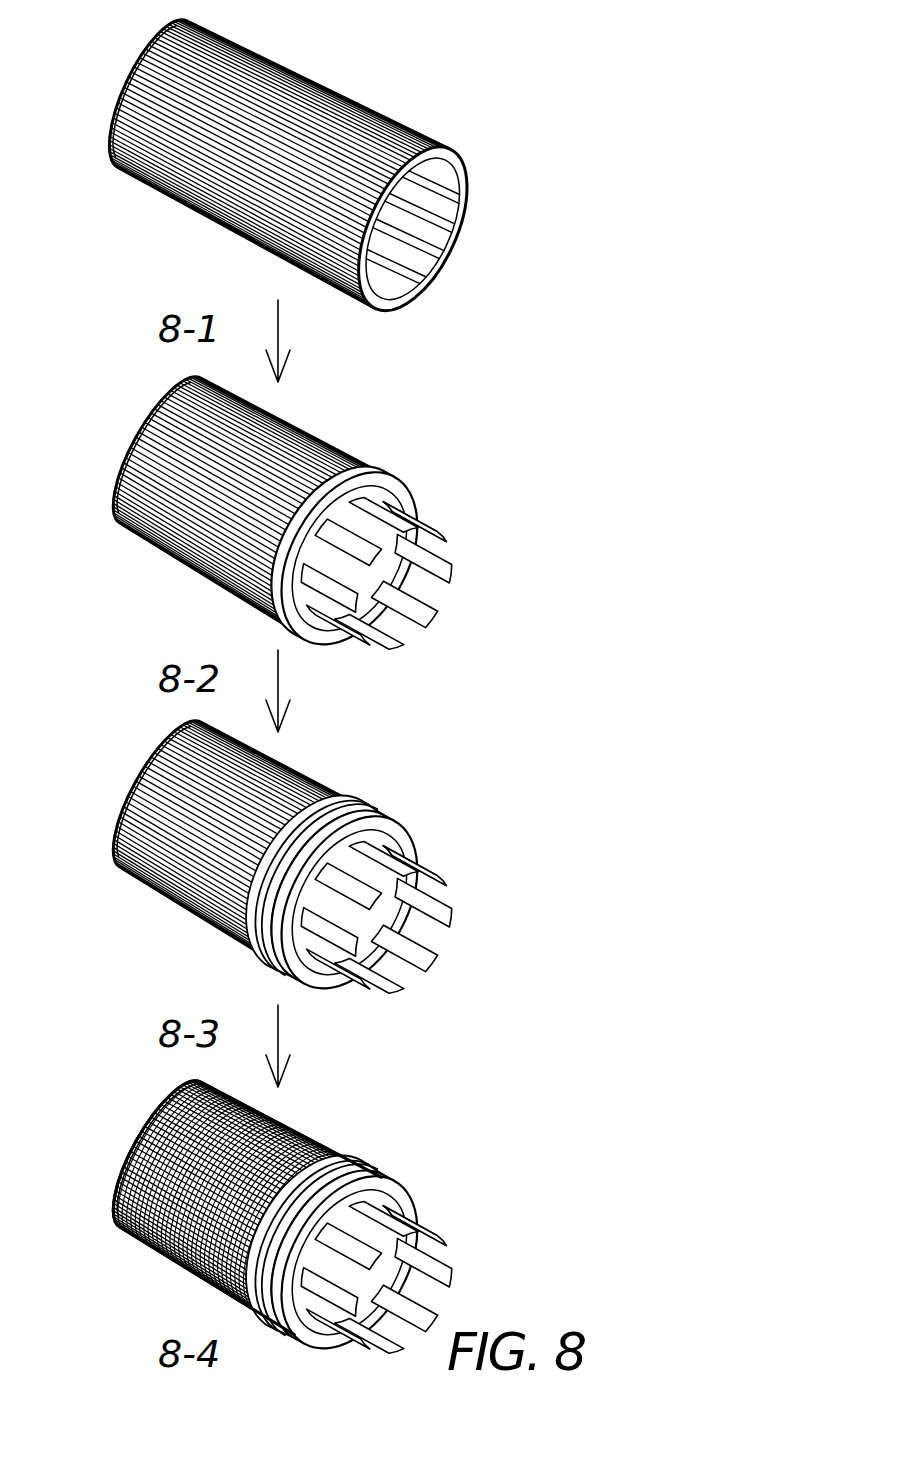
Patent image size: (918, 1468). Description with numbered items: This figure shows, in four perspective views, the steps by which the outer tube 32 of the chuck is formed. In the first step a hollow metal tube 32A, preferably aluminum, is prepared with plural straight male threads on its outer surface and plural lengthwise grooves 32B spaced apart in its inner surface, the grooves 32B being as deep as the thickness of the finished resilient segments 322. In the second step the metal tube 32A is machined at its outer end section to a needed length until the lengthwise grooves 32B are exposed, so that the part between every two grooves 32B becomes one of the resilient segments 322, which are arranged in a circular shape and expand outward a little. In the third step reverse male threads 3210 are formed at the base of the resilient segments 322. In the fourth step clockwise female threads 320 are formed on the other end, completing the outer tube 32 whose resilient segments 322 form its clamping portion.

The outer tube 32 is at (117, 1242).
The hollow metal tube 32A is at (278, 696).
The lengthwise grooves 32B is at (441, 748).
The female threads 320 is at (153, 1112).
The resilient segments 322 is at (447, 543).
The reverse male threads 3210 is at (353, 817).